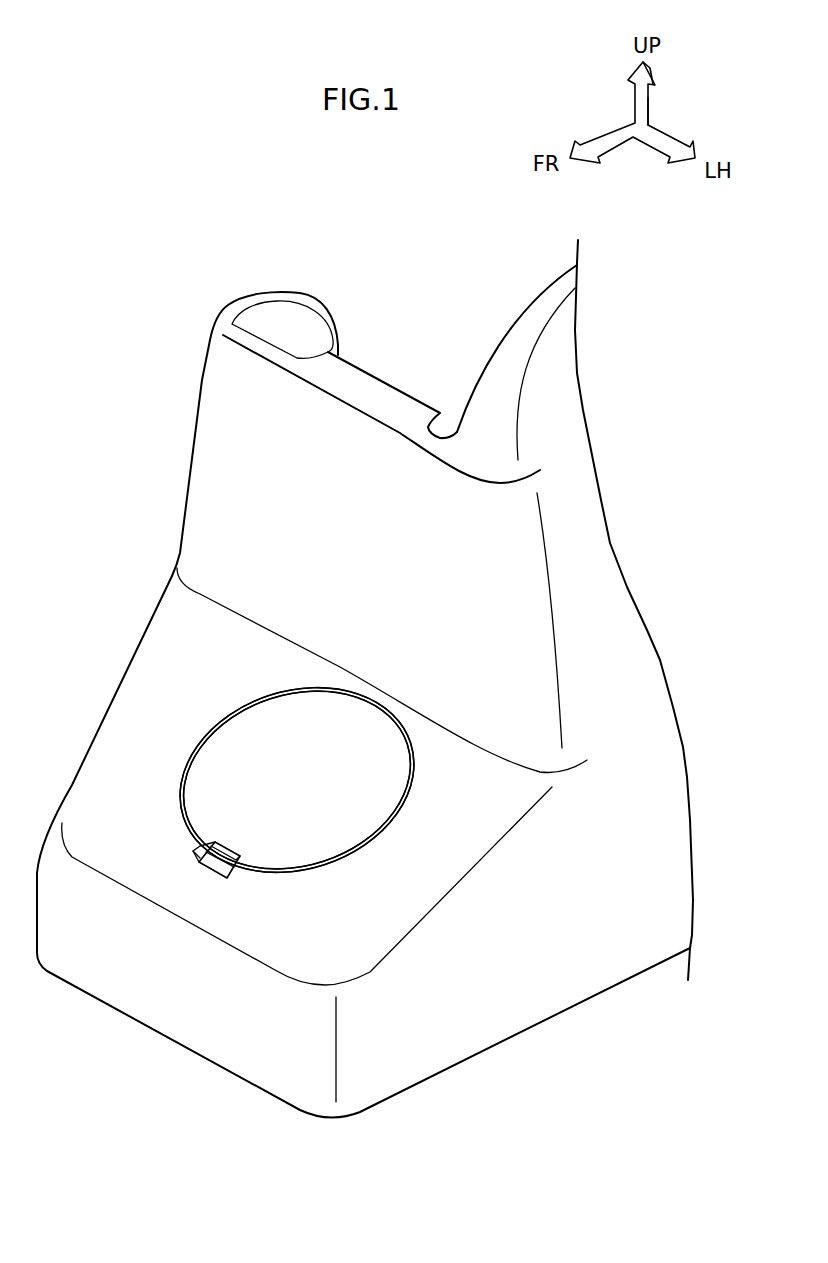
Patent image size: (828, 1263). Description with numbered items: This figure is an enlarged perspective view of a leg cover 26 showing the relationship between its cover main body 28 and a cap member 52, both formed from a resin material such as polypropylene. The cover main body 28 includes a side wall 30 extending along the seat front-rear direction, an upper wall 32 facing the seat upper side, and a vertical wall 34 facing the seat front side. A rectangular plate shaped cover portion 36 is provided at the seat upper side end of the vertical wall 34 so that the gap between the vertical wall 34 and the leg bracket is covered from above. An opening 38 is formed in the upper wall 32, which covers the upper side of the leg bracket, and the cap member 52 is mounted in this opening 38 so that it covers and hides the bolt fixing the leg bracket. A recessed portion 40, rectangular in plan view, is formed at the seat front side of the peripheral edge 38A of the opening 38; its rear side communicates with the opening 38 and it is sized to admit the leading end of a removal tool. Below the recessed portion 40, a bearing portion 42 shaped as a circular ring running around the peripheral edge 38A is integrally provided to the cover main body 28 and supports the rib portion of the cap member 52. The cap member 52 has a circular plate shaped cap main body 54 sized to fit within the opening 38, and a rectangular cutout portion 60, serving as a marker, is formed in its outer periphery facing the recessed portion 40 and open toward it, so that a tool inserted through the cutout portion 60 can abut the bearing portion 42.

The leg cover 26 is at (137, 292).
The cover main body 28 is at (643, 560).
The side wall 30 is at (637, 675).
The upper wall 32 is at (107, 730).
The vertical wall 34 is at (207, 472).
The cover portion 36 is at (367, 387).
The opening 38 is at (183, 810).
The peripheral edge 38A is at (303, 882).
The recessed portion 40 is at (235, 872).
The bearing portion 42 is at (203, 856).
The cap member 52 is at (362, 776).
The cap main body 54 is at (338, 820).
The cutout portion 60 is at (210, 848).